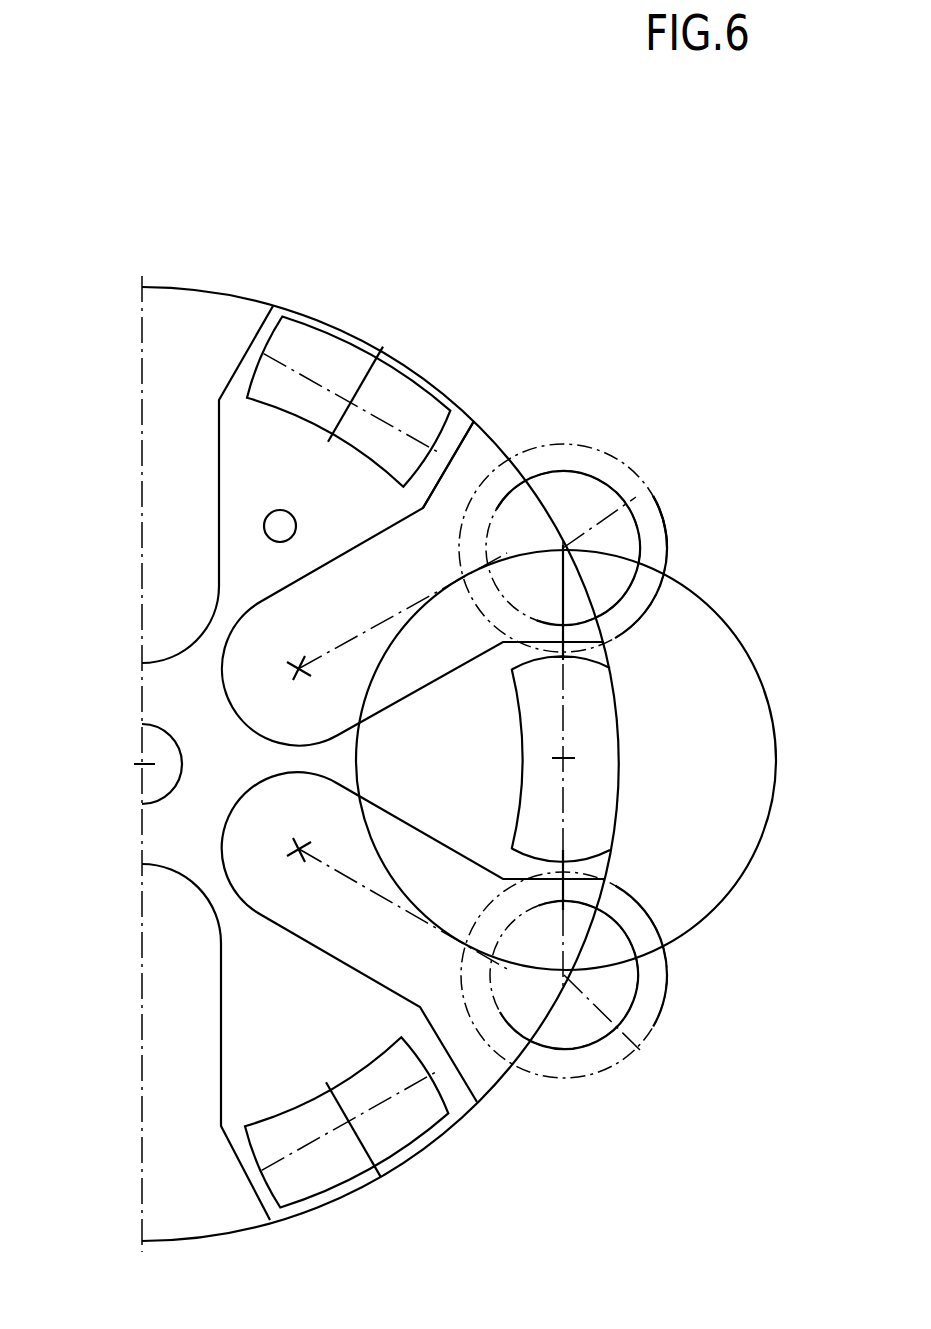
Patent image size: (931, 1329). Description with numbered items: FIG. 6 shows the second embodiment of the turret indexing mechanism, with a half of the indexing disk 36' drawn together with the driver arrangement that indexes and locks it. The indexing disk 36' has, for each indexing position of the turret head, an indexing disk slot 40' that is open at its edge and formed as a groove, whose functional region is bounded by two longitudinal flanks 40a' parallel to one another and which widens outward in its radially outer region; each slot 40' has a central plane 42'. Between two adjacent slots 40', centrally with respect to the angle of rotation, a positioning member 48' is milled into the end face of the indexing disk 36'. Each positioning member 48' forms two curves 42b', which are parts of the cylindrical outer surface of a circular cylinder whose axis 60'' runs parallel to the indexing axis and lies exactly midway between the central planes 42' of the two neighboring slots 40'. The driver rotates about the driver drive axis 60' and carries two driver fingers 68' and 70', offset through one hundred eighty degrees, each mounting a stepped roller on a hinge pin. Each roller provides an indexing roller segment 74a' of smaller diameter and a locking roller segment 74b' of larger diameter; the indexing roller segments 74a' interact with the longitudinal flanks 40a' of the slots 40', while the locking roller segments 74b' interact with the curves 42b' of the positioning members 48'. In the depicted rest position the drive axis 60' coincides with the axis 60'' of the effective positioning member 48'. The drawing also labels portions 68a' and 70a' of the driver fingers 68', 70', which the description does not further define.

The indexing disk 36' is at (455, 690).
The positioning member 48' is at (167, 763).
The curve 42b' is at (403, 680).
The axis 60'' is at (431, 709).
The longitudinal flank 40a' is at (413, 761).
The central plane 42' is at (397, 761).
The indexing disk slot 40' is at (523, 410).
The driver drive axis 60' is at (601, 765).
The driver finger 68' is at (616, 507).
The indexing roller segment 74a' is at (579, 493).
The locking roller segment 74b' is at (616, 548).
The bearing ring portion 68a' is at (679, 486).
The driver finger 70' is at (612, 990).
The bearing inner ring 70a' is at (600, 1004).